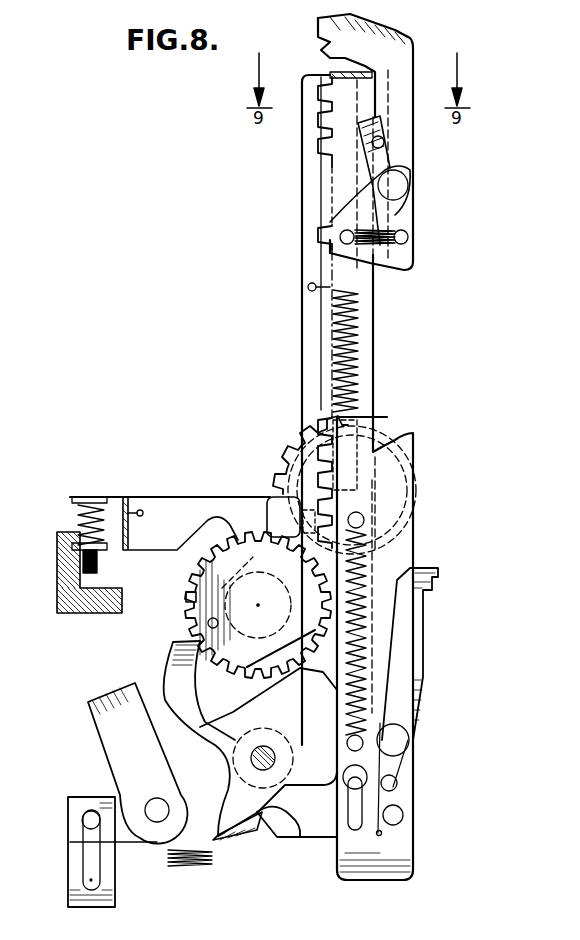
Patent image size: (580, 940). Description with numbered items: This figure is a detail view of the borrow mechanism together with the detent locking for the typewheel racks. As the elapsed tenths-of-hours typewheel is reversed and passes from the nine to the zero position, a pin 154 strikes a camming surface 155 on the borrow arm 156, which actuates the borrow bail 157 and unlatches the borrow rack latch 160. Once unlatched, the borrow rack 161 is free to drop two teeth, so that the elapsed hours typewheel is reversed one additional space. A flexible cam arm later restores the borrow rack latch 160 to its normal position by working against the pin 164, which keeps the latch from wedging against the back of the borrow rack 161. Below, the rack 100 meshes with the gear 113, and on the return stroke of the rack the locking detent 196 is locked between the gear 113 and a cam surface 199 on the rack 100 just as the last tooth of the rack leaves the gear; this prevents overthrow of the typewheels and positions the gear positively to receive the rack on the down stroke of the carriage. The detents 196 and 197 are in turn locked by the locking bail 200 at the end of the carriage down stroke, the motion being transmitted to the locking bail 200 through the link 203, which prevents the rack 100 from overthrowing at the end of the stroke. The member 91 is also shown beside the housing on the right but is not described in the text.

The lever bar 91 is at (402, 633).
The rack 100 is at (388, 447).
The gear 113 is at (273, 675).
The pin 154 is at (208, 624).
The camming surface 155 is at (186, 597).
The borrow arm 156 is at (173, 513).
The borrow bail 157 is at (304, 327).
The borrow rack latch 160 is at (395, 160).
The borrow rack 161 is at (323, 443).
The pin 164 is at (377, 170).
The locking detent 196 is at (230, 787).
The detent 197 is at (170, 662).
The cam surface 199 is at (302, 837).
The locking bail 200 is at (112, 742).
The link 203 is at (72, 880).